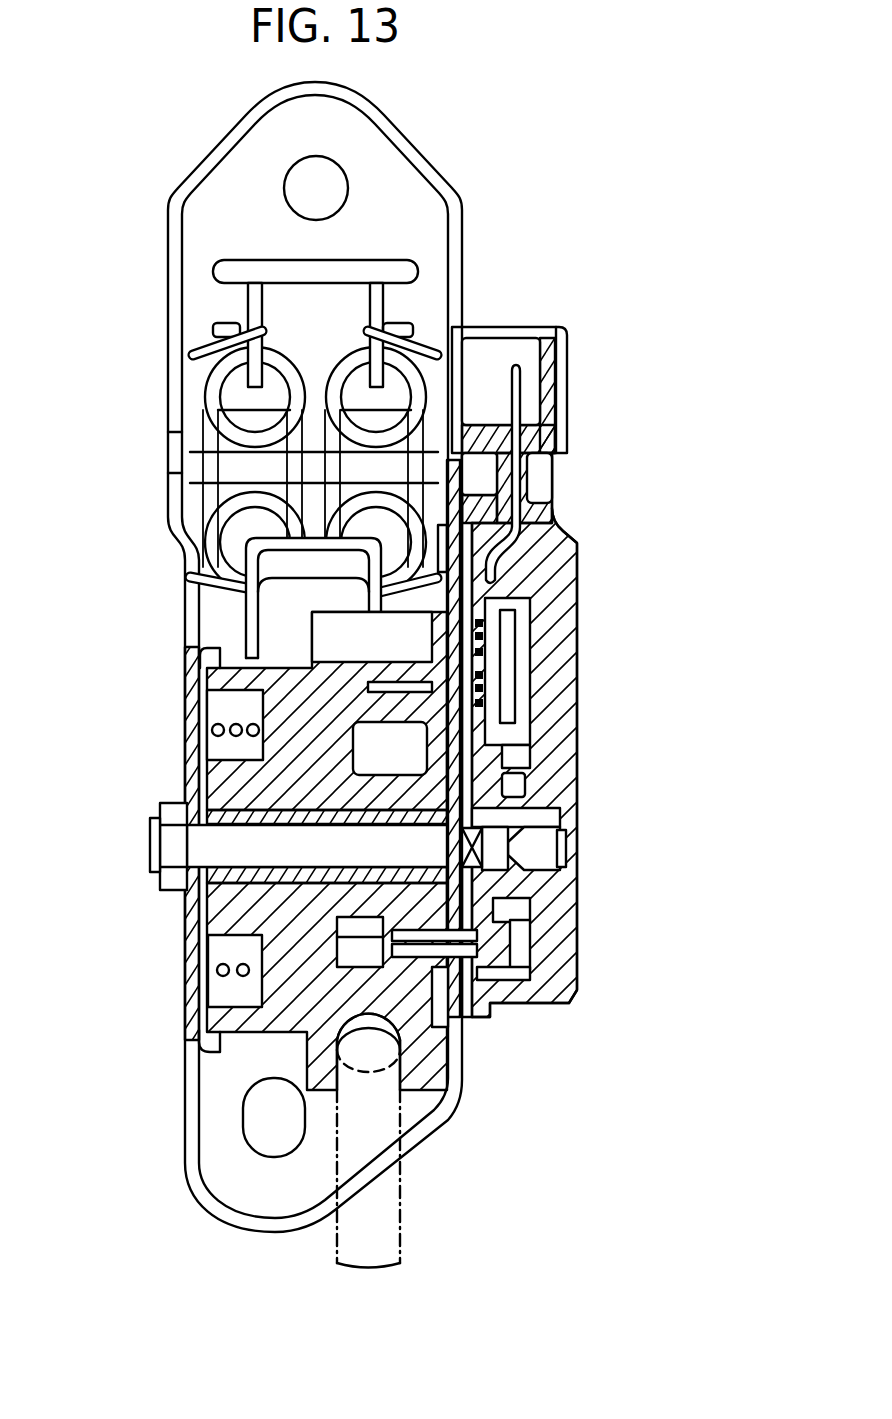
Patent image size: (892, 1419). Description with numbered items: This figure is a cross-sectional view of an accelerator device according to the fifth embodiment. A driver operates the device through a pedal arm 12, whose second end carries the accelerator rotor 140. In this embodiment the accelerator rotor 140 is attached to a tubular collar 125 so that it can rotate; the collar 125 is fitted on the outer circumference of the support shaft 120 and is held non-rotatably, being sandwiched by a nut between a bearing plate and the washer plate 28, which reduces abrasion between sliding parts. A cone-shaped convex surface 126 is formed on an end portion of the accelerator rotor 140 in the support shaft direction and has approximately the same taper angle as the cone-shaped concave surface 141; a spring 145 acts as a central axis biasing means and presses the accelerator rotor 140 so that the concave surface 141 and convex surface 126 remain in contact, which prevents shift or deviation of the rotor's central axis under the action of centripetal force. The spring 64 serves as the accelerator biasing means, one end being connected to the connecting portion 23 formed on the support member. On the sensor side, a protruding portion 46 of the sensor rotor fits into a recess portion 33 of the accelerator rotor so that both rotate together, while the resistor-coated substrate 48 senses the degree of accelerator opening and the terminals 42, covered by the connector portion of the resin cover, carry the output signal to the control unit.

The pedal arm 12 is at (408, 1233).
The connecting portion 23 is at (247, 296).
The washer plate 28 is at (200, 1040).
The recess portion 33 is at (448, 1058).
The terminals 42 is at (520, 407).
The protruding portion 46 is at (462, 1050).
The substrate 48 is at (474, 598).
The spring 64 is at (427, 427).
The support shaft 120 is at (228, 853).
The collar 125 is at (232, 797).
The cone-shaped convex surface 126 is at (417, 777).
The accelerator rotor 140 is at (245, 1033).
The cone-shaped concave surface 141 is at (425, 800).
The spring 145 is at (207, 728).